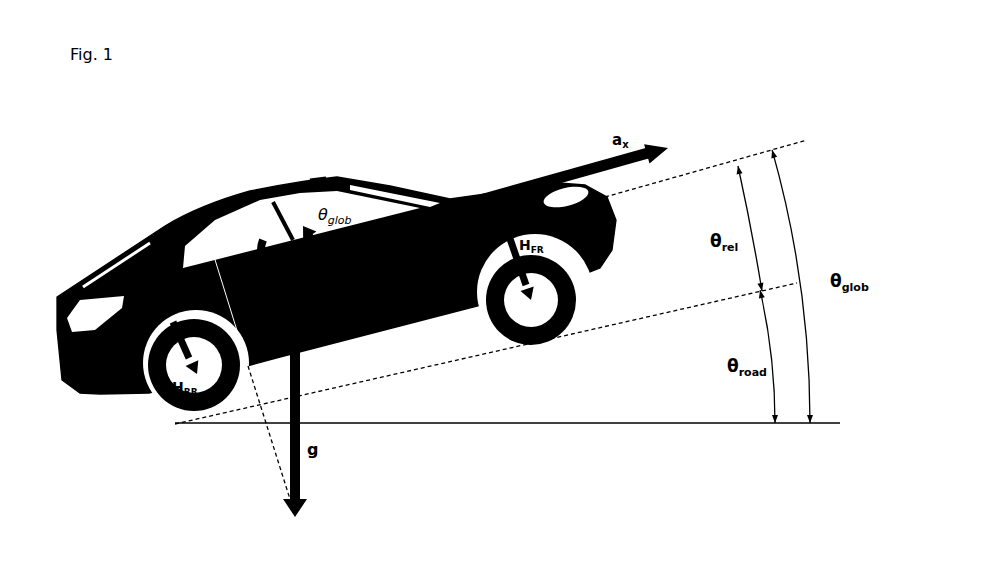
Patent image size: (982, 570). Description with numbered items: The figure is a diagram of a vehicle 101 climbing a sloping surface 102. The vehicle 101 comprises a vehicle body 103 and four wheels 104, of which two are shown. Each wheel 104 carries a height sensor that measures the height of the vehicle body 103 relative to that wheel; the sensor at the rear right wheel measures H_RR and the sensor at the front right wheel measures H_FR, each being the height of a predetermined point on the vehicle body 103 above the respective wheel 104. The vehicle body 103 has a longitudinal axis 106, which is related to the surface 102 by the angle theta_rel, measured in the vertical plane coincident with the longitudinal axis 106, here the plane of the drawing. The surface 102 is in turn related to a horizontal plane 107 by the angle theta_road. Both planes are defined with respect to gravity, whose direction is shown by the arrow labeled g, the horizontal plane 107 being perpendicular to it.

The vehicle 101 is at (135, 166).
The sloping surface 102 is at (603, 330).
The vehicle body 103 is at (318, 176).
The wheel 104 is at (163, 405).
The longitudinal axis 106 is at (760, 153).
The horizontal plane 107 is at (622, 424).